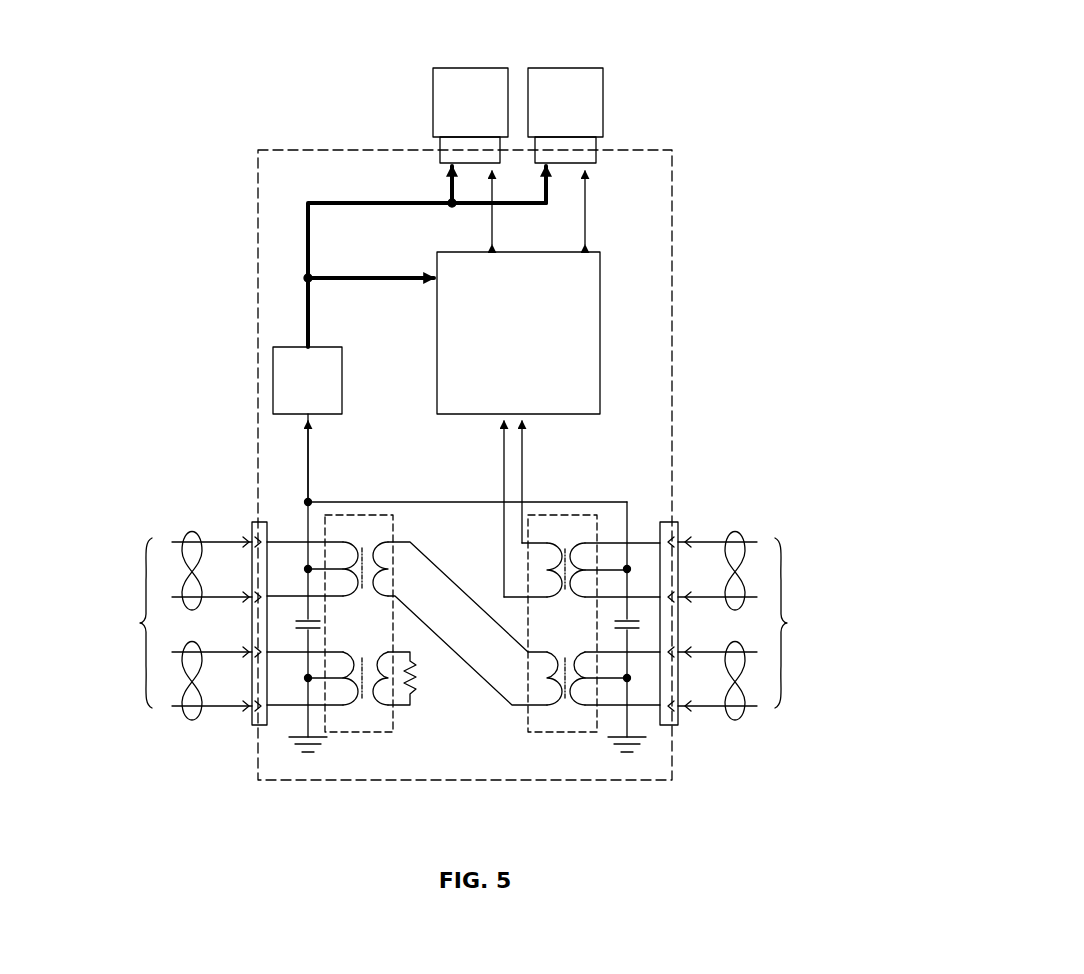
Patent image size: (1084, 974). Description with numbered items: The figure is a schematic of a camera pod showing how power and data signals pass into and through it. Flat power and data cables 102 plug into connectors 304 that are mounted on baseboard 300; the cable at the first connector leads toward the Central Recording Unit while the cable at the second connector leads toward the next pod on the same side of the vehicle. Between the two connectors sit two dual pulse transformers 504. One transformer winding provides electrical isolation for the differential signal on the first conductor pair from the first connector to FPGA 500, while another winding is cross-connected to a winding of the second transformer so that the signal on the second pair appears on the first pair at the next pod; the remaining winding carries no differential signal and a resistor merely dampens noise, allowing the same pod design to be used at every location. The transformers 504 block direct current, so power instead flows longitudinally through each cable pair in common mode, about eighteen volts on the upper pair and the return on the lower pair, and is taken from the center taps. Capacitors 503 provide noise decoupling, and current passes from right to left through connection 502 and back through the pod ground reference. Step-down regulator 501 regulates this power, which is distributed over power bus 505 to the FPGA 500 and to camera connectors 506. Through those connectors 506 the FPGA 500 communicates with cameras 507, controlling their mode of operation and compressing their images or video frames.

The flat power and data cable 102 is at (146, 561).
The baseboard 300 is at (258, 190).
The connector 304 is at (252, 529).
The FPGA 500 is at (600, 308).
The step-down regulator 501 is at (342, 395).
The connection 502 is at (392, 502).
The capacitor 503 is at (621, 630).
The dual pulse transformer 504 is at (378, 732).
The power bus 505 is at (359, 203).
The camera connector 506 is at (440, 155).
The camera 507 is at (475, 68).